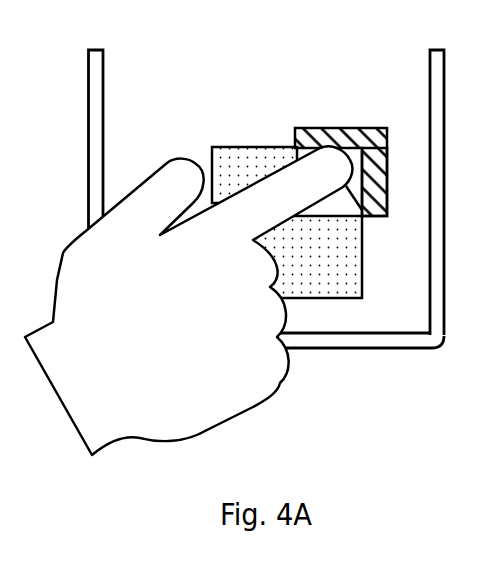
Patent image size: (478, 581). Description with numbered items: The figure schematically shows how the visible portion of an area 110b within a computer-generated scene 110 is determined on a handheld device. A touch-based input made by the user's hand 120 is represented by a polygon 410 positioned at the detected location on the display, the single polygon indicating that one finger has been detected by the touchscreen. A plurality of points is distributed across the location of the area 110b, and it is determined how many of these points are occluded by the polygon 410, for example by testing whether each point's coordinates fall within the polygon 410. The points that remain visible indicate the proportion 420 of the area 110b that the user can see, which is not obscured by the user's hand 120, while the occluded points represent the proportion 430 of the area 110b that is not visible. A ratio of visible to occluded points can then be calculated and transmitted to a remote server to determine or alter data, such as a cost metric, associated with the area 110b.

The computer-generated scene 110 is at (177, 71).
The area 110b is at (337, 298).
The user's hand 120 is at (187, 333).
The polygon representation of the touch-based input 410 is at (358, 128).
The visible proportion of the area 420 is at (352, 258).
The non-visible proportion of the area 430 is at (377, 204).